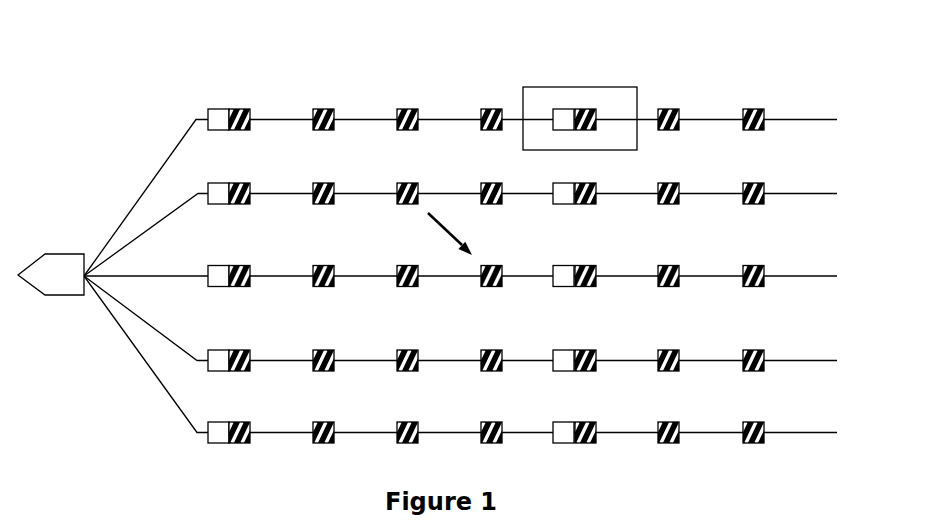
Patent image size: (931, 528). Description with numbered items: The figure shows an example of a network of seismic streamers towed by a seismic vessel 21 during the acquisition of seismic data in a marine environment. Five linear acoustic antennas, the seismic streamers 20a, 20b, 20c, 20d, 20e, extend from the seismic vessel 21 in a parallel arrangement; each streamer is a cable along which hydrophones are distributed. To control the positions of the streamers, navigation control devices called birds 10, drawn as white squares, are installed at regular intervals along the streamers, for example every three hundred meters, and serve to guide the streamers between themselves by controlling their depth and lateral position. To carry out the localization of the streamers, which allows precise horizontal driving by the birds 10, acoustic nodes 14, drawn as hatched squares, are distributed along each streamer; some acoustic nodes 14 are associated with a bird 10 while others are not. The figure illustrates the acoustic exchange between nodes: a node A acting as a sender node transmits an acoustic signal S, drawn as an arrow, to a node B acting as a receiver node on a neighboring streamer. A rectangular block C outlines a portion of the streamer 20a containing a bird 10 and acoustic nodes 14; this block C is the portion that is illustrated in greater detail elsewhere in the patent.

The bird 10 is at (217, 109).
The acoustic node 14 is at (250, 109).
The seismic streamer 20a is at (188, 128).
The seismic streamer 20b is at (165, 213).
The seismic streamer 20c is at (144, 275).
The seismic streamer 20d is at (135, 318).
The seismic streamer 20e is at (155, 390).
The seismic vessel 21 is at (65, 312).
The sender node A is at (407, 182).
The receiver node B is at (491, 266).
The acoustic signal S is at (450, 234).
The block C is at (637, 87).